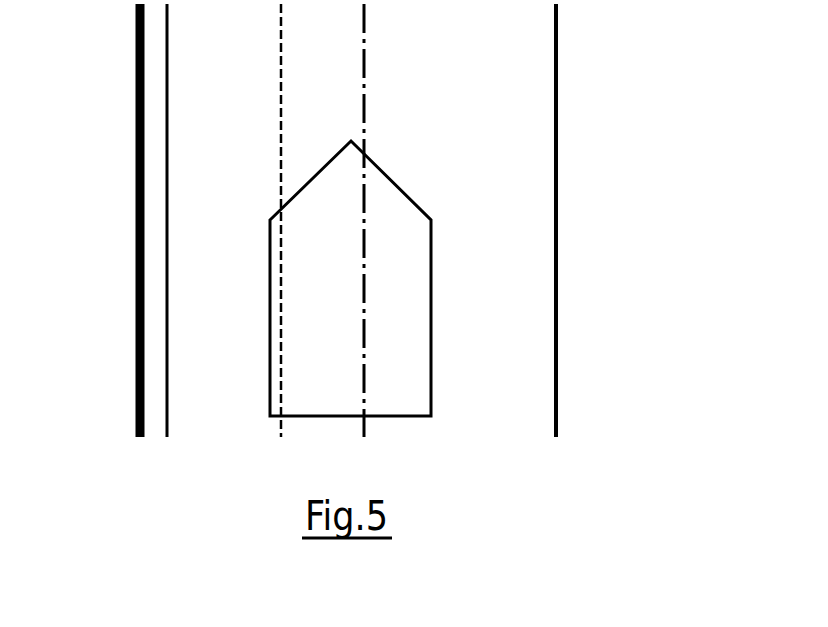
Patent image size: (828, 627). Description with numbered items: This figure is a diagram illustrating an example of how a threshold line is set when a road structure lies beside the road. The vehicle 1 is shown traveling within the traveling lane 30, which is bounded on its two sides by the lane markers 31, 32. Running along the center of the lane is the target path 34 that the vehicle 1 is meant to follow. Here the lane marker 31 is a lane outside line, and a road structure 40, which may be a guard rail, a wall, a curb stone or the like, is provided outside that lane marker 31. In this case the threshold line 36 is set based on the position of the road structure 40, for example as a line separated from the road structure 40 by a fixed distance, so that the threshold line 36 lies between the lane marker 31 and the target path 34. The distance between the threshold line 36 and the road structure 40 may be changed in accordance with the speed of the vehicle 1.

The vehicle 1 is at (432, 297).
The traveling lane 30 is at (493, 63).
The lane marker 31 is at (167, 340).
The lane marker 32 is at (556, 343).
The target path 34 is at (363, 127).
The threshold line 36 is at (281, 78).
The road structure 40 is at (136, 178).